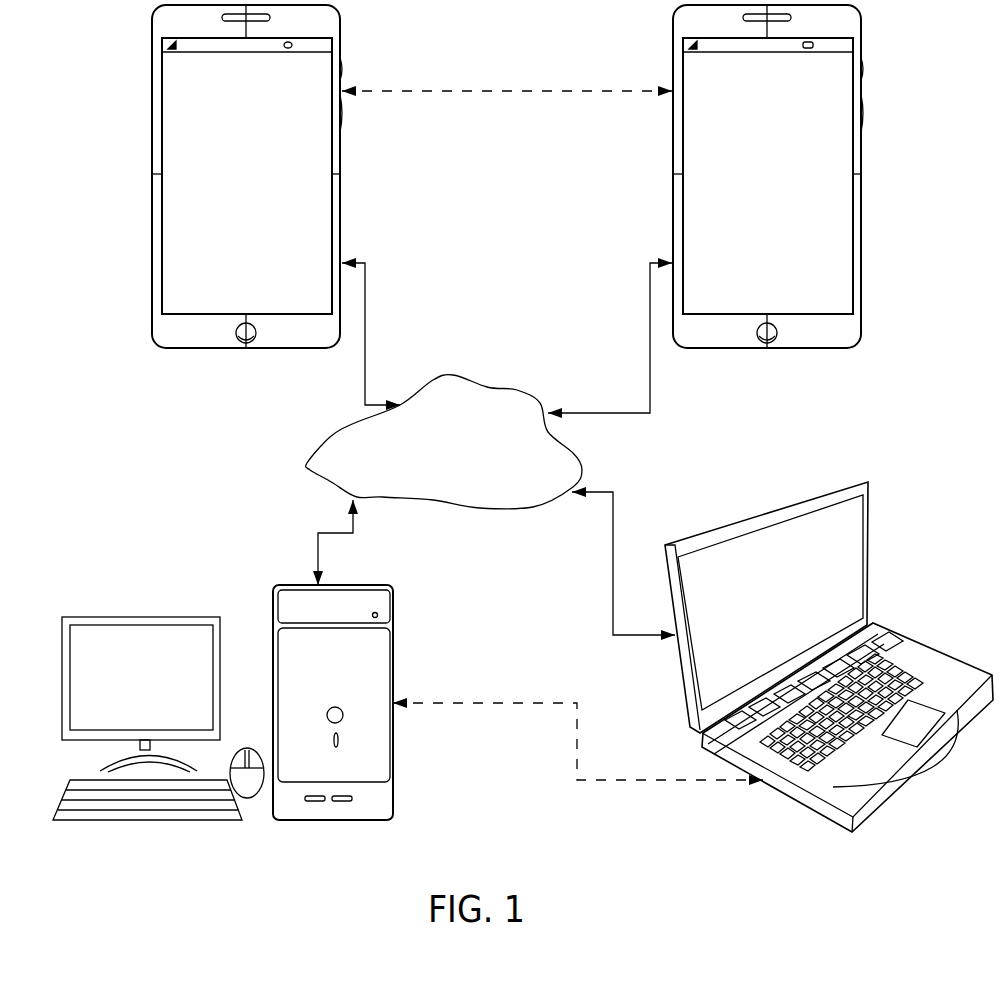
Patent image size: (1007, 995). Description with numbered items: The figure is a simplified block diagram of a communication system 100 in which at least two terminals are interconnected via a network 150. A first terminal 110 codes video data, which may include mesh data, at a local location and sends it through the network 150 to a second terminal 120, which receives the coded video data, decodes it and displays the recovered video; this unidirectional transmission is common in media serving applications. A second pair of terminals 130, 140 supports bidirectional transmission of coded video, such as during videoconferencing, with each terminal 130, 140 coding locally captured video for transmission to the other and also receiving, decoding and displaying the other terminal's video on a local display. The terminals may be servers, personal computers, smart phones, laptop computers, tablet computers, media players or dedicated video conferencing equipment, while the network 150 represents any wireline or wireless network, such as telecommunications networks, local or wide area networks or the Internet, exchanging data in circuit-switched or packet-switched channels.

The communication system 100 is at (80, 71).
The first terminal 110 is at (867, 533).
The second terminal 120 is at (393, 783).
The terminal 130 is at (213, 176).
The terminal 140 is at (671, 115).
The network 150 is at (464, 440).